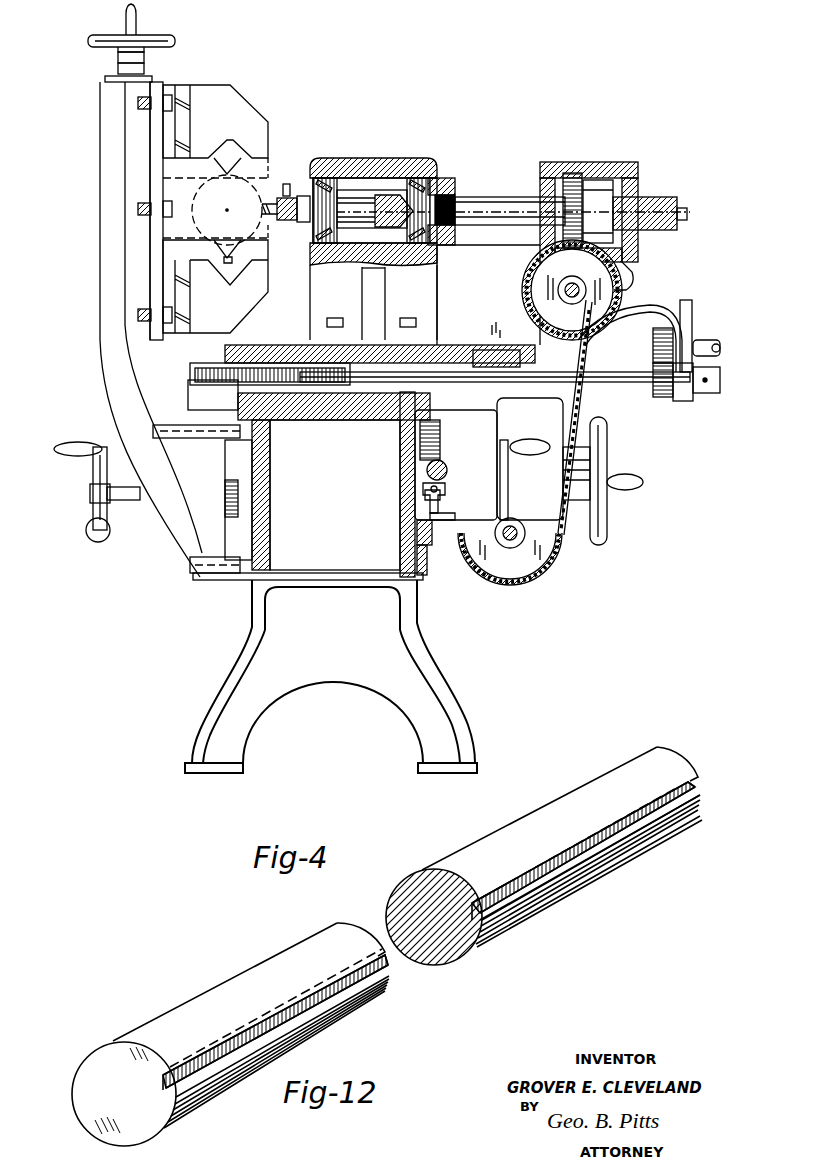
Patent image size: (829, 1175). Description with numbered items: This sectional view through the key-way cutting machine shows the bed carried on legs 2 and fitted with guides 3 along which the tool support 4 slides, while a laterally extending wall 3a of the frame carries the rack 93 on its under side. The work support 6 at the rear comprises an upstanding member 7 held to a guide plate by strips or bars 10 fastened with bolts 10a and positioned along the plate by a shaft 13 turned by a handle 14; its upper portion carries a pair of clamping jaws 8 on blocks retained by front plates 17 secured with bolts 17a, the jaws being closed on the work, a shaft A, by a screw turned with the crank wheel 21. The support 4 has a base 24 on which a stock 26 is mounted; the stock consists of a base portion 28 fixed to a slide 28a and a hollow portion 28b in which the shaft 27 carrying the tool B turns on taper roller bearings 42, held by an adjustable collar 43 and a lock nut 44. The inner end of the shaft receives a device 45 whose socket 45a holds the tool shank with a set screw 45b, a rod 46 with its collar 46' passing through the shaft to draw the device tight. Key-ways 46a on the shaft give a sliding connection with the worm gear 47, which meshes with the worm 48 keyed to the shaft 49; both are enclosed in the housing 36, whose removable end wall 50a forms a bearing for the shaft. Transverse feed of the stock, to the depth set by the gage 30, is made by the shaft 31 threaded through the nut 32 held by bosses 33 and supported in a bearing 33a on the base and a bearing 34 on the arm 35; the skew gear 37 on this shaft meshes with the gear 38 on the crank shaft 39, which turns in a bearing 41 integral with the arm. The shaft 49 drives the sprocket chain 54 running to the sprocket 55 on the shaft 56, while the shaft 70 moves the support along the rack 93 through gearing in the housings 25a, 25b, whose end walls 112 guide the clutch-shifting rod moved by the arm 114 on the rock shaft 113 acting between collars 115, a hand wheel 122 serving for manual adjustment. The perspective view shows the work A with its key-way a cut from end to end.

In FIG. 4, the legs 2 is at (455, 713).
In FIG. 4, the guides 3 is at (236, 401).
In FIG. 4, the laterally extending walls 3a is at (366, 397).
In FIG. 4, the support 4 is at (270, 366).
In FIG. 4, the support for the work 6 is at (142, 451).
In FIG. 4, the upstanding member 7 is at (105, 228).
In FIG. 4, the clamping jaws 8 is at (233, 100).
In FIG. 4, the strips or bars 10 is at (256, 447).
In FIG. 4, the bolts 10a is at (158, 440).
In FIG. 4, the shaft 13 is at (135, 501).
In FIG. 4, the handle 14 is at (92, 513).
In FIG. 4, the front plates 17 is at (152, 272).
In FIG. 4, the bolts 17a is at (170, 98).
In FIG. 4, the crank wheel 21 is at (92, 46).
In FIG. 4, the base 24 is at (346, 457).
In FIG. 4, the housing 25a is at (432, 581).
In FIG. 4, the housing 25b is at (530, 459).
In FIG. 4, the stock 26 is at (454, 275).
In FIG. 4, the shaft 27 is at (400, 185).
In FIG. 4, the base portion 28 is at (430, 345).
In FIG. 4, the slide 28a is at (375, 345).
In FIG. 4, the hollow portion 28b is at (372, 160).
In FIG. 4, the gage 30 is at (705, 393).
In FIG. 4, the shaft 31 is at (630, 370).
In FIG. 4, the nut 32 is at (248, 365).
In FIG. 4, the bosses 33 is at (247, 387).
In FIG. 4, the bearing 33a is at (501, 342).
In FIG. 4, the bearing 34 is at (683, 400).
In FIG. 4, the arm 35 is at (660, 318).
In FIG. 4, the housing 36 is at (618, 283).
In FIG. 4, the skew gear 37 is at (660, 398).
In FIG. 4, the gear 38 is at (647, 345).
In FIG. 4, the shaft 39 is at (718, 345).
In FIG. 4, the bearing 41 is at (700, 335).
In FIG. 4, the taper roller bearings 42 is at (330, 178).
In FIG. 4, the collar 43 is at (458, 172).
In FIG. 4, the nut 44 is at (457, 188).
In FIG. 4, the device 45 is at (348, 268).
In FIG. 4, the socket 45a is at (301, 222).
In FIG. 4, the set screw 45b is at (310, 195).
In FIG. 4, the rod 46 is at (572, 173).
In FIG. 4, the key-ways 46a is at (518, 195).
In FIG. 4, the collar 46' is at (663, 204).
In FIG. 4, the worm gear 47 is at (590, 163).
In FIG. 4, the worm 48 is at (548, 288).
In FIG. 4, the shaft 49 is at (575, 292).
In FIG. 4, the end wall 50a is at (620, 186).
In FIG. 4, the sprocket chain 54 is at (580, 401).
In FIG. 4, the sprocket 55 is at (515, 582).
In FIG. 4, the shaft 56 is at (520, 546).
In FIG. 4, the shaft 70 is at (425, 491).
In FIG. 4, the rack 93 is at (400, 425).
In FIG. 4, the end walls 112 is at (508, 491).
In FIG. 4, the rock shaft 113 is at (455, 496).
In FIG. 4, the arm 114 is at (430, 521).
In FIG. 4, the collars 115 is at (448, 466).
In FIG. 4, the hand wheel 122 is at (607, 531).
In FIG. 12, the shaft A is at (544, 856).
In FIG. 12, the key-way a is at (598, 845).
In FIG. 4, the tool B is at (286, 186).